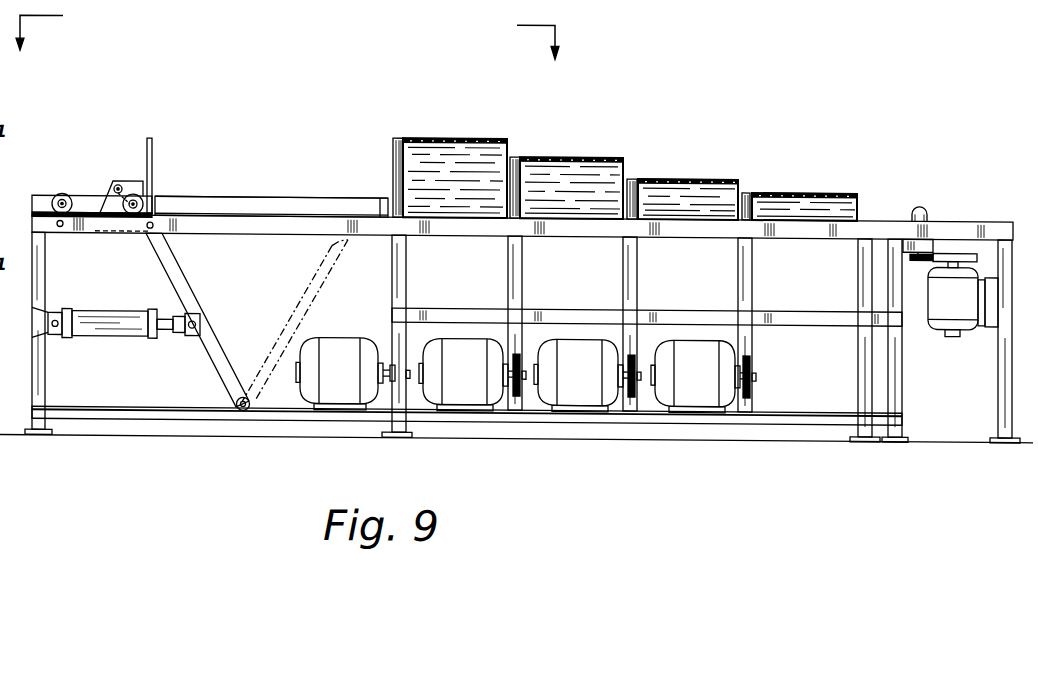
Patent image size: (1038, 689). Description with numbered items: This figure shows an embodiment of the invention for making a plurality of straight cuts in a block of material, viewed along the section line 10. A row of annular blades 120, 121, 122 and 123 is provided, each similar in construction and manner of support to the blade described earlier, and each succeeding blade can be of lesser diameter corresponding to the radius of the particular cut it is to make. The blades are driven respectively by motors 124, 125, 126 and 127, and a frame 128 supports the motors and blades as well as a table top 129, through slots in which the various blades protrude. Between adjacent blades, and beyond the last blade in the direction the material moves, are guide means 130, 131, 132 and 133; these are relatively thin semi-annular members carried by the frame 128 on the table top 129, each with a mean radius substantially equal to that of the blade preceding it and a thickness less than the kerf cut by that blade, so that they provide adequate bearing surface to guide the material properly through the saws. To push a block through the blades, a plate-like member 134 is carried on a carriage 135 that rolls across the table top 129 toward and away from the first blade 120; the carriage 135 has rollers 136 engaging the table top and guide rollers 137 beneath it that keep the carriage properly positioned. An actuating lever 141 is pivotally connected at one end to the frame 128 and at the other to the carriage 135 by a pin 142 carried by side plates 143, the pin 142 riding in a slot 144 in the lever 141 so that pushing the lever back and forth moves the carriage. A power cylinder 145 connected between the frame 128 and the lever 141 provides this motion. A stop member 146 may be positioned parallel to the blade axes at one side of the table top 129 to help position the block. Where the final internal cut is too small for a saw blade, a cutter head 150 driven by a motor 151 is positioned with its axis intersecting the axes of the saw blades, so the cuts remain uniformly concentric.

The section line 10- 10 is at (286, 46).
The annular blade 120 is at (397, 134).
The annular blade 121 is at (515, 152).
The annular blade 122 is at (632, 176).
The annular blade 123 is at (750, 186).
The motor 124 is at (308, 389).
The motor 125 is at (432, 389).
The motor 126 is at (548, 388).
The motor 127 is at (663, 388).
The frame 128 is at (157, 418).
The table top 129 is at (236, 211).
The guide means 130 is at (466, 135).
The guide means 131 is at (582, 153).
The guide means 132 is at (692, 175).
The guide means 133 is at (817, 187).
The plate-like member 134 is at (153, 151).
The carriage 135 is at (87, 201).
The rollers 136 is at (65, 193).
The guide rollers 137 is at (58, 228).
The actuating lever 141 is at (188, 295).
The pin 142 is at (118, 176).
The side plates 143 is at (133, 179).
The slot 144 is at (133, 223).
The power cylinder 145 is at (108, 309).
The stop member 146 is at (288, 211).
The cutter head 150 is at (923, 199).
The motor 151 is at (968, 320).